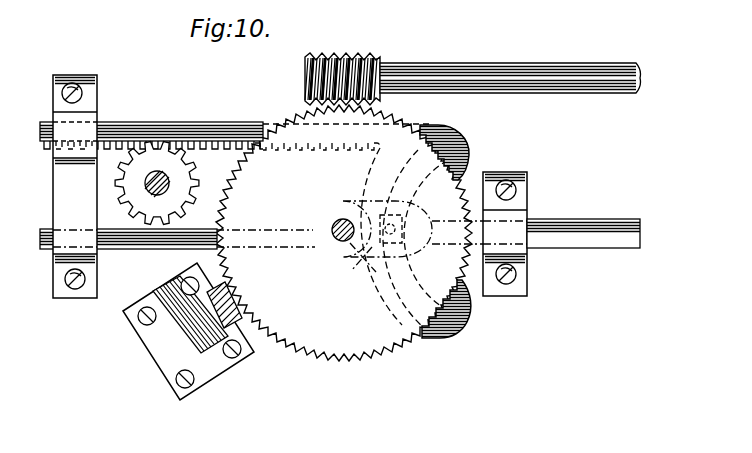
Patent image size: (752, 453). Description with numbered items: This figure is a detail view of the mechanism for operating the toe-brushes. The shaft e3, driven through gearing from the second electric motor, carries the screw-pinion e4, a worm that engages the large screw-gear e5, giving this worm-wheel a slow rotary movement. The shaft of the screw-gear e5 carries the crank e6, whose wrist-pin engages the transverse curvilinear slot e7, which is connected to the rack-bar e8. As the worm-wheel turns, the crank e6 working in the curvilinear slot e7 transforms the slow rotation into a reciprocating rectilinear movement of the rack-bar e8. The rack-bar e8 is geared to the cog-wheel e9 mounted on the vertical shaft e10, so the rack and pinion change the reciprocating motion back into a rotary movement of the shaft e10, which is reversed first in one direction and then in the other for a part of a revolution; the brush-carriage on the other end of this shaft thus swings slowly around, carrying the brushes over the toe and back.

The shaft e3 is at (510, 70).
The screw-pinion e4 is at (352, 57).
The screw-gear e5 is at (306, 342).
The crank e6 is at (378, 256).
The transverse curvilinear slot e7 is at (472, 153).
The rack-bar e8 is at (207, 125).
The cog-wheel e9 is at (117, 188).
The vertical shaft e10 is at (155, 200).